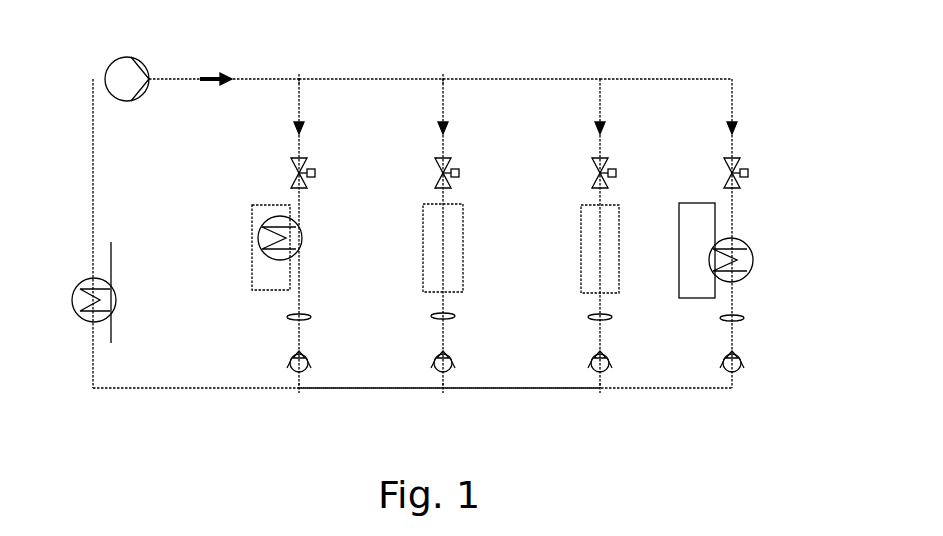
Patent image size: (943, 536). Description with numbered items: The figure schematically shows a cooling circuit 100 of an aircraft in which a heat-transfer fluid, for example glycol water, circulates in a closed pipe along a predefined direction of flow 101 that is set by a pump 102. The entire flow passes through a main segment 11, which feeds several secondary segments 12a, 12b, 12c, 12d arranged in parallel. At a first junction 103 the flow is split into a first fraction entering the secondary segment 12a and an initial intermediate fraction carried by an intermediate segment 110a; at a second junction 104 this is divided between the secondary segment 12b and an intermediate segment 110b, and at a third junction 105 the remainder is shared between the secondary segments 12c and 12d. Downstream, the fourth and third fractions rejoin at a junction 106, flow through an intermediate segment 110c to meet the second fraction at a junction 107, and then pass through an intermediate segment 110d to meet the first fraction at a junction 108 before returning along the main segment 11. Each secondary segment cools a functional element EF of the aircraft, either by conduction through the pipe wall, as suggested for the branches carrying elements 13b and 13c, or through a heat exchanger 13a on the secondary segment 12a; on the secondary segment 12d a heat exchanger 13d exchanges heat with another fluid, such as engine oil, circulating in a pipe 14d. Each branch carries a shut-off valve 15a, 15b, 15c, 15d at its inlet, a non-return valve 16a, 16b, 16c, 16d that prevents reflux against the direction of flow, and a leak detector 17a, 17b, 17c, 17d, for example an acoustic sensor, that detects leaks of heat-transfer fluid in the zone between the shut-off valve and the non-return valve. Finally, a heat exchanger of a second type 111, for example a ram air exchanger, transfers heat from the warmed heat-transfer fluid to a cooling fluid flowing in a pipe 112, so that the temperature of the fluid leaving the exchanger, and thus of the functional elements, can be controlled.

The cooling circuit 100 is at (722, 48).
The predefined direction of flow 101 is at (222, 70).
The pump 102 is at (137, 60).
The first junction 103 is at (299, 79).
The second junction 104 is at (443, 79).
The third junction 105 is at (600, 79).
The junction 106 is at (600, 388).
The junction 107 is at (443, 388).
The junction 108 is at (299, 388).
The intermediate segment 110a is at (376, 79).
The intermediate segment 110b is at (526, 79).
The intermediate segment 110c is at (510, 388).
The intermediate segment 110d is at (362, 388).
The heat exchanger of a second type 111 is at (84, 282).
The pipe 112 is at (111, 256).
The main segment 11 is at (174, 388).
The secondary segment 12a is at (299, 104).
The secondary segment 12b is at (443, 102).
The secondary segment 12c is at (600, 102).
The secondary segment 12d is at (732, 102).
The heat exchanger 13a is at (302, 236).
The electrical component b 13b is at (443, 248).
The electrical component c 13c is at (600, 249).
The heat exchanger 13d is at (736, 232).
The pipe 14d is at (700, 203).
The shut-off valve 15a is at (315, 171).
The shut-off valve 15b is at (459, 170).
The shut-off valve 15c is at (616, 170).
The shut-off valve 15d is at (748, 170).
The non-return valve 16a is at (304, 356).
The non-return valve 16b is at (448, 354).
The non-return valve 16c is at (605, 354).
The non-return valve 16d is at (738, 354).
The leak detector 17a is at (310, 317).
The leak detector 17b is at (453, 315).
The leak detector 17c is at (610, 315).
The leak detector 17d is at (742, 317).